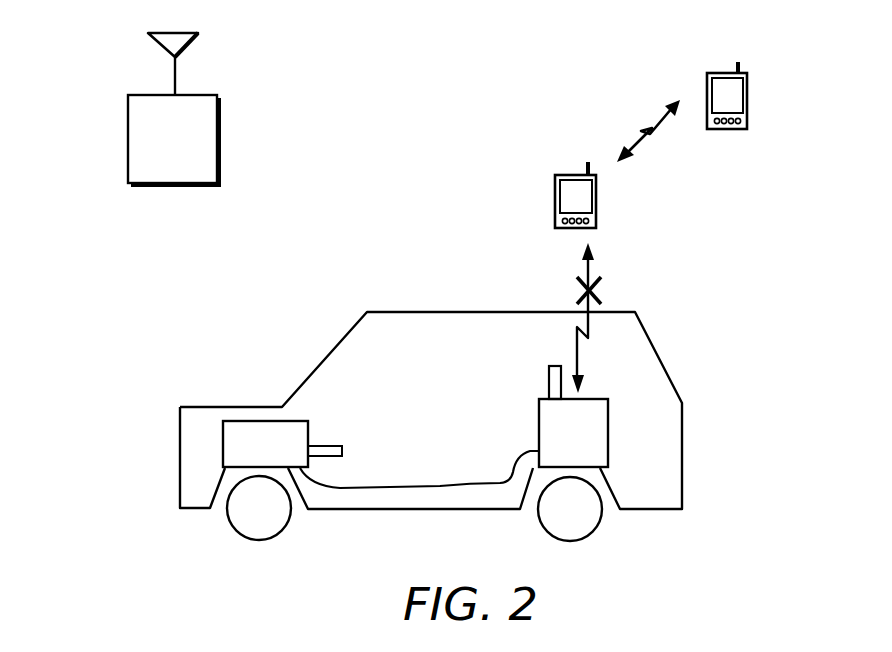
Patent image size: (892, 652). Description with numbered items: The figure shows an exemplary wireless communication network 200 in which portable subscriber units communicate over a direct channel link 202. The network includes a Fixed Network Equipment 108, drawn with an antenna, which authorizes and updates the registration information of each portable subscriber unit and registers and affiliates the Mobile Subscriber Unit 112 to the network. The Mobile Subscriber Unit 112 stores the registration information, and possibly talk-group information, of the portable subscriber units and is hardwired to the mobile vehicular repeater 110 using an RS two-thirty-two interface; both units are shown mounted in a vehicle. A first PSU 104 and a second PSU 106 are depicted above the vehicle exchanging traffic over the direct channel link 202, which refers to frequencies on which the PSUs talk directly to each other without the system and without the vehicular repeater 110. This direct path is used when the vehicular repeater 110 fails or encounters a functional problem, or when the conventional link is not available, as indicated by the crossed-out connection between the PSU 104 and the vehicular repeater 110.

The wireless communication network 200 is at (825, 556).
The Fixed Network Equipment 108 is at (145, 95).
The first PSU 104 is at (573, 175).
The second PSU 106 is at (723, 73).
The direct channel link 202 is at (642, 123).
The mobile vehicular repeater 110 is at (600, 399).
The Mobile Subscriber Unit 112 is at (312, 422).